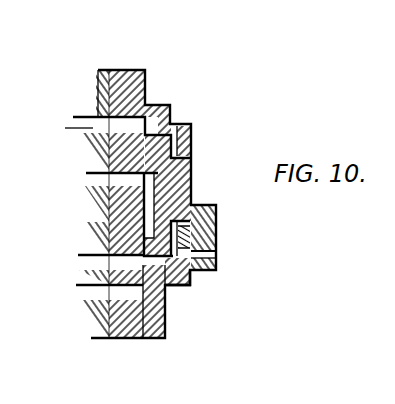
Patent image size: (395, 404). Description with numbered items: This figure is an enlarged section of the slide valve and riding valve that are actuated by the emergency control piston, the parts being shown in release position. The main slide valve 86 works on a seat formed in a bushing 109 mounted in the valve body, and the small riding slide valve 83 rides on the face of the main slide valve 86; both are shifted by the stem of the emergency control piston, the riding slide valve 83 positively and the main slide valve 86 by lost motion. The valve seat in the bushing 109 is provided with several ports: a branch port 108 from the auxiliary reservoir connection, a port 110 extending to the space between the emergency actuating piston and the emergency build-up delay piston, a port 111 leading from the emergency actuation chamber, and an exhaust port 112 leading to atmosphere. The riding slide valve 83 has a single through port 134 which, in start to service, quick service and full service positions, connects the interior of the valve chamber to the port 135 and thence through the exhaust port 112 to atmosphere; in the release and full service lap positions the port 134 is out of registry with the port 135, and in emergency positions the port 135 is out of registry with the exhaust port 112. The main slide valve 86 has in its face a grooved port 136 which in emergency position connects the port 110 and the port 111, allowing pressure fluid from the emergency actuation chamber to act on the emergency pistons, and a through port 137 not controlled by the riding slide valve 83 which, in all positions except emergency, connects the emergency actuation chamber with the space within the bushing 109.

The bushing 109 is at (135, 62).
The port 111 is at (70, 113).
The port 110 is at (84, 172).
The branch port 108 is at (88, 200).
The exhaust port 112 is at (82, 253).
The main slide valve 86 is at (150, 331).
The port 135 is at (172, 282).
The through port 134 is at (211, 243).
The riding slide valve 83 is at (226, 208).
The grooved port 136 is at (190, 172).
The through port 137 is at (174, 133).